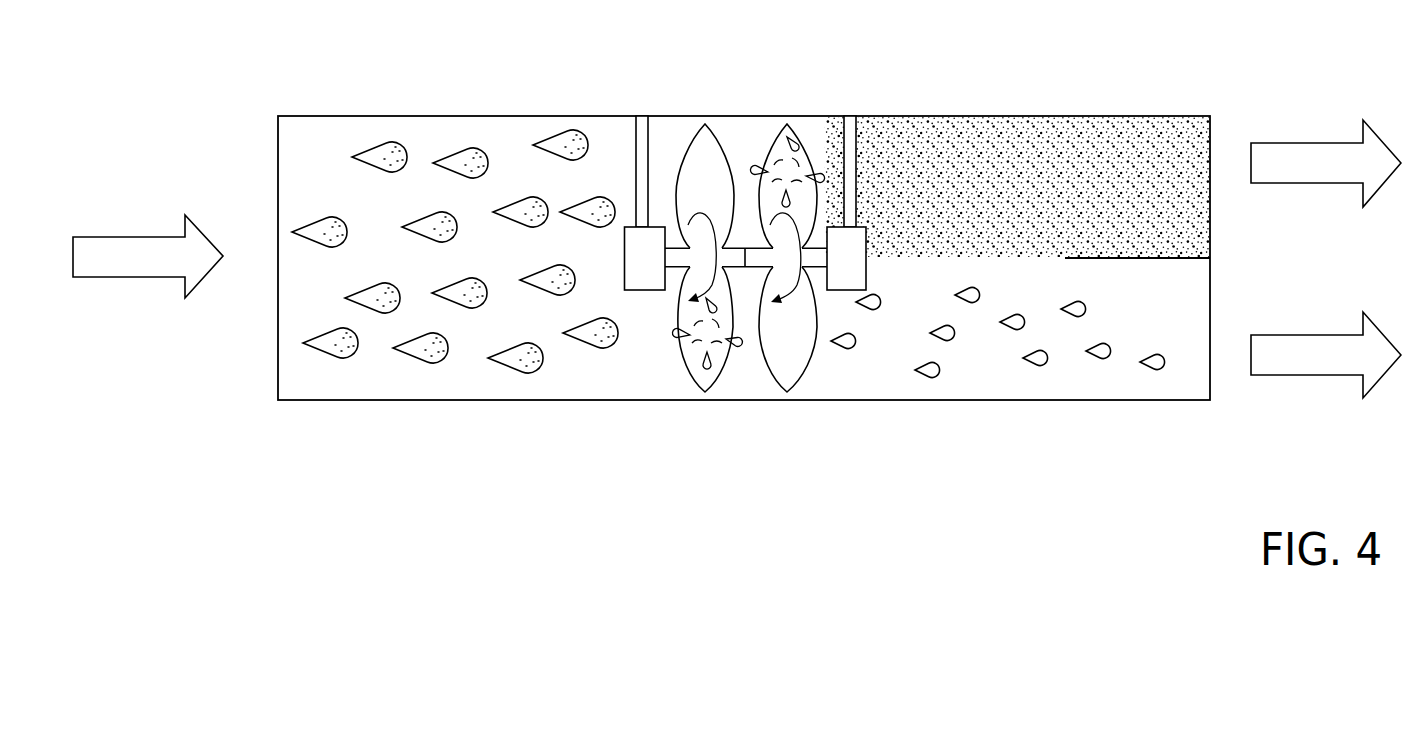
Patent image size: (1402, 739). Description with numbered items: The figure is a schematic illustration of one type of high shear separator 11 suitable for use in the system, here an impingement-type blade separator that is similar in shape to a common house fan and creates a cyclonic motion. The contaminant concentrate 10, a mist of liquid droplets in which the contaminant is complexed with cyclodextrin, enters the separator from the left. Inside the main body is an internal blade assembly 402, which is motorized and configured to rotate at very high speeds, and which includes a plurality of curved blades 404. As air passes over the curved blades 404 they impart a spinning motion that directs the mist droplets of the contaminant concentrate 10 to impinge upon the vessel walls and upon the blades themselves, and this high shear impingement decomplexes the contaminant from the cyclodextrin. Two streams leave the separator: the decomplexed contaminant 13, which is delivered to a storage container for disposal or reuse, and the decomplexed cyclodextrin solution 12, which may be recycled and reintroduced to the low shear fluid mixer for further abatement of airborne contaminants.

The contaminant concentrate 10 is at (130, 237).
The high shear separator 11 is at (350, 404).
The decomplexed cyclodextrin solution 12 is at (1308, 335).
The decomplexed contaminant 13 is at (1308, 143).
The internal blade assembly 402 is at (646, 298).
The curved blades 404 is at (688, 365).